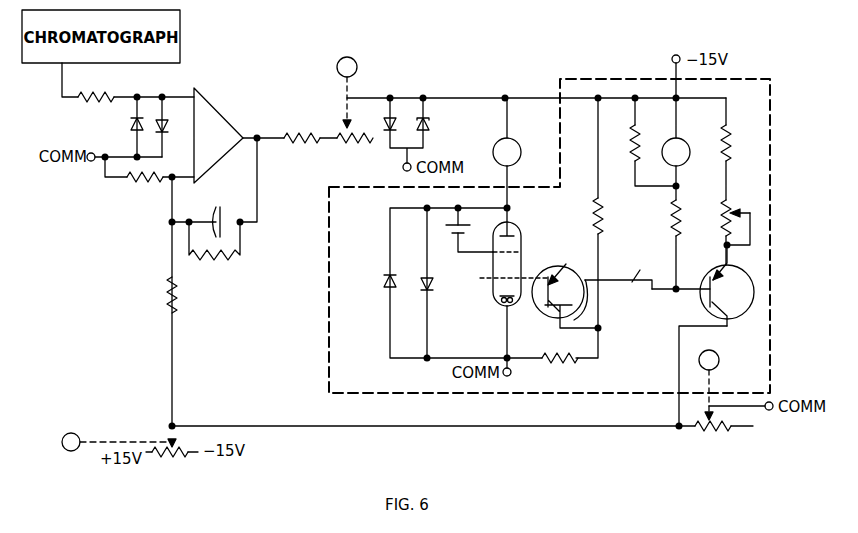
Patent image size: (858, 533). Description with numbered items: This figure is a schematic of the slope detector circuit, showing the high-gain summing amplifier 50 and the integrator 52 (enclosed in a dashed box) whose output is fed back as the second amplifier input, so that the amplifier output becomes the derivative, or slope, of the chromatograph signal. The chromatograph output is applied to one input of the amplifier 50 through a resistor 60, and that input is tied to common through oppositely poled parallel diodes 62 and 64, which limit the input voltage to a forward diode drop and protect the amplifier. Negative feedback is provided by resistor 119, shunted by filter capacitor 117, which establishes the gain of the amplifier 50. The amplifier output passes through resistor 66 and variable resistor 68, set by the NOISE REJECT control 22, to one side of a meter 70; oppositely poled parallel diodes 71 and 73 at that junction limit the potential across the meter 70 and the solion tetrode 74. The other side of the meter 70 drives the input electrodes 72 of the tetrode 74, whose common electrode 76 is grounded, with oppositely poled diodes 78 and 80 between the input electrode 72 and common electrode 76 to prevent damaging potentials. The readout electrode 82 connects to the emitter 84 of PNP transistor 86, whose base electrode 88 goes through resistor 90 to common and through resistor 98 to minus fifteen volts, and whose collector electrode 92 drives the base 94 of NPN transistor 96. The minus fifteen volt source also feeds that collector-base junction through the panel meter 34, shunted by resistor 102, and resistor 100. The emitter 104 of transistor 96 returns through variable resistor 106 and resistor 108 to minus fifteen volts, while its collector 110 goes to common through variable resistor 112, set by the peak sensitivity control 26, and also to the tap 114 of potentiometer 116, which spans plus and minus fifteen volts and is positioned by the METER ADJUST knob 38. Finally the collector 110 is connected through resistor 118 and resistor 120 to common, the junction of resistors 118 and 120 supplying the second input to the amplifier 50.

The NOISE REJECT control 22 is at (352, 62).
The peak sensitivity control 26 is at (716, 368).
The meter 34 is at (686, 140).
The METER ADJUST knob 38 is at (78, 433).
The summing amplifier 50 is at (240, 112).
The integrator 52 is at (770, 257).
The resistor 60 is at (100, 90).
The diode 62 is at (131, 128).
The diode 64 is at (168, 128).
The resistor 66 is at (296, 148).
The variable resistor 68 is at (349, 148).
The meter 70 is at (517, 142).
The diode 71 is at (384, 118).
The input electrodes 72 is at (514, 228).
The diode 73 is at (429, 124).
The solion tetrode 74 is at (521, 245).
The common electrode 76 is at (500, 306).
The diode 78 is at (386, 290).
The diode 80 is at (422, 288).
The readout electrode 82 is at (492, 278).
The emitter 84 is at (566, 264).
The transistor 86 is at (550, 312).
The base electrode 88 is at (551, 344).
The resistor 90 is at (555, 364).
The collector electrode 92 is at (584, 318).
The base 94 is at (694, 294).
The transistor 96 is at (716, 297).
The resistor 98 is at (603, 222).
The resistor 100 is at (681, 218).
The resistor 102 is at (630, 140).
The emitter 104 is at (716, 263).
The variable resistor 106 is at (731, 206).
The resistor 108 is at (737, 144).
The collector 110 is at (727, 318).
The variable resistor 112 is at (714, 432).
The tap 114 is at (170, 435).
The potentiometer 116 is at (176, 458).
The filter capacitor 117 is at (212, 210).
The resistor 118 is at (176, 296).
The resistor 119 is at (222, 262).
The resistor 120 is at (145, 183).